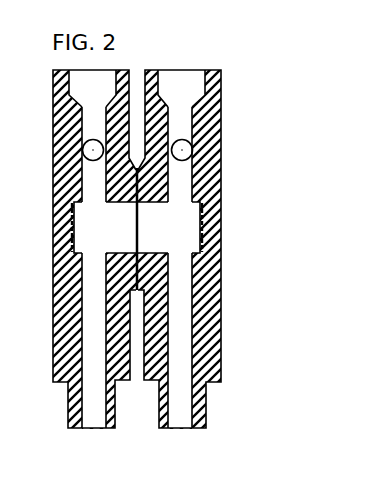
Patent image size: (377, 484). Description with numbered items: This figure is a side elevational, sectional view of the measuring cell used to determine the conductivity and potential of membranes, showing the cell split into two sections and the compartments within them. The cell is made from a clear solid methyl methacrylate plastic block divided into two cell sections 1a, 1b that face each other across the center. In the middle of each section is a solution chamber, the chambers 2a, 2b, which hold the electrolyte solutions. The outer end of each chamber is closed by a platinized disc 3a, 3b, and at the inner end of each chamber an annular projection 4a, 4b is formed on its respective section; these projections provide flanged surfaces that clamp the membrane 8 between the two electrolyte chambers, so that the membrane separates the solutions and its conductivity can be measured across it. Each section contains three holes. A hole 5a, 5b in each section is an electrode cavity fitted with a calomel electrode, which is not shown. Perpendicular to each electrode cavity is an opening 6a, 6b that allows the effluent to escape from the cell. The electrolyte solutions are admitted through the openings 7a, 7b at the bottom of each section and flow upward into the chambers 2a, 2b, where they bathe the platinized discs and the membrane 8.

The cell section 1a is at (62, 332).
The cell section 1b is at (212, 323).
The chamber 2a is at (88, 215).
The chamber 2b is at (190, 215).
The platinized disc 3a is at (73, 240).
The platinized disc 3b is at (223, 239).
The annular projection 4a is at (130, 152).
The annular projection 4b is at (145, 152).
The hole 5a is at (98, 78).
The hole 5b is at (190, 76).
The opening 6a is at (93, 150).
The opening 6b is at (182, 150).
The opening 7a is at (92, 423).
The opening 7b is at (182, 418).
The membrane 8 is at (135, 227).